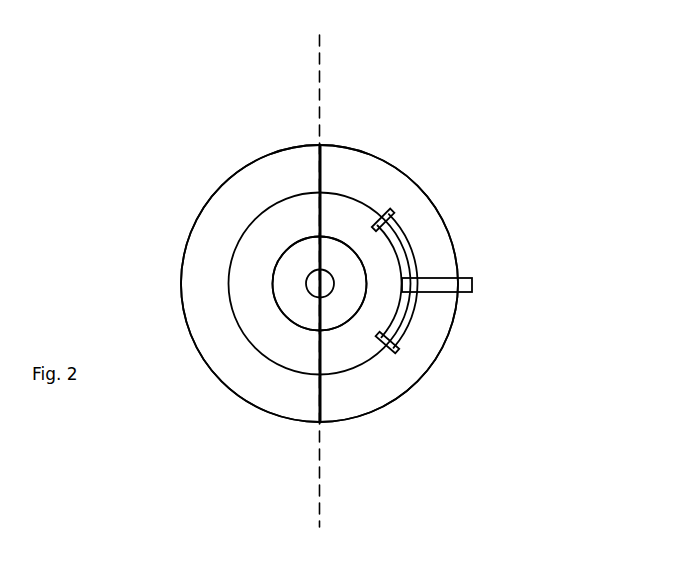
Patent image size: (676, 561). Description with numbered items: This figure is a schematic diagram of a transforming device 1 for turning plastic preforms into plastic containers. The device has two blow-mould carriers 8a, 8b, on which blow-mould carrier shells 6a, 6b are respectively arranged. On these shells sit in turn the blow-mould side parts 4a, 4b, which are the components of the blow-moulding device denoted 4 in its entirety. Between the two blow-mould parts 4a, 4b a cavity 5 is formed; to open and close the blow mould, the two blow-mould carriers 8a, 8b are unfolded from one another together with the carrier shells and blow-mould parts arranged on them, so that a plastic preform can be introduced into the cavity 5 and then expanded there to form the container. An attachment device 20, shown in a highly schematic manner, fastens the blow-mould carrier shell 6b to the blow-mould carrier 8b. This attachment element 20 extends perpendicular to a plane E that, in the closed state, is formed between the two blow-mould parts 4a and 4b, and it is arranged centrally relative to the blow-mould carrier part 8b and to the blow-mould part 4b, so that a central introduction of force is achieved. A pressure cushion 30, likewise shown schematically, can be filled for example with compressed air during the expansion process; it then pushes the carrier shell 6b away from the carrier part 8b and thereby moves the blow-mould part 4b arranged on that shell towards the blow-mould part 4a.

The rotary device 1 is at (529, 267).
The blow-moulding device 4 is at (278, 234).
The blow-mould side part 4a is at (292, 278).
The blow-mould side part 4b is at (328, 265).
The cavity 5 is at (326, 286).
The blow-mould carrier shell 6a is at (288, 222).
The blow-mould carrier shell 6b is at (367, 245).
The blow-mould carrier 8a is at (198, 288).
The blow-mould carrier 8b is at (415, 233).
The attachment device 20 is at (445, 285).
The pressure cushion 30 is at (397, 325).
The plane E is at (330, 277).